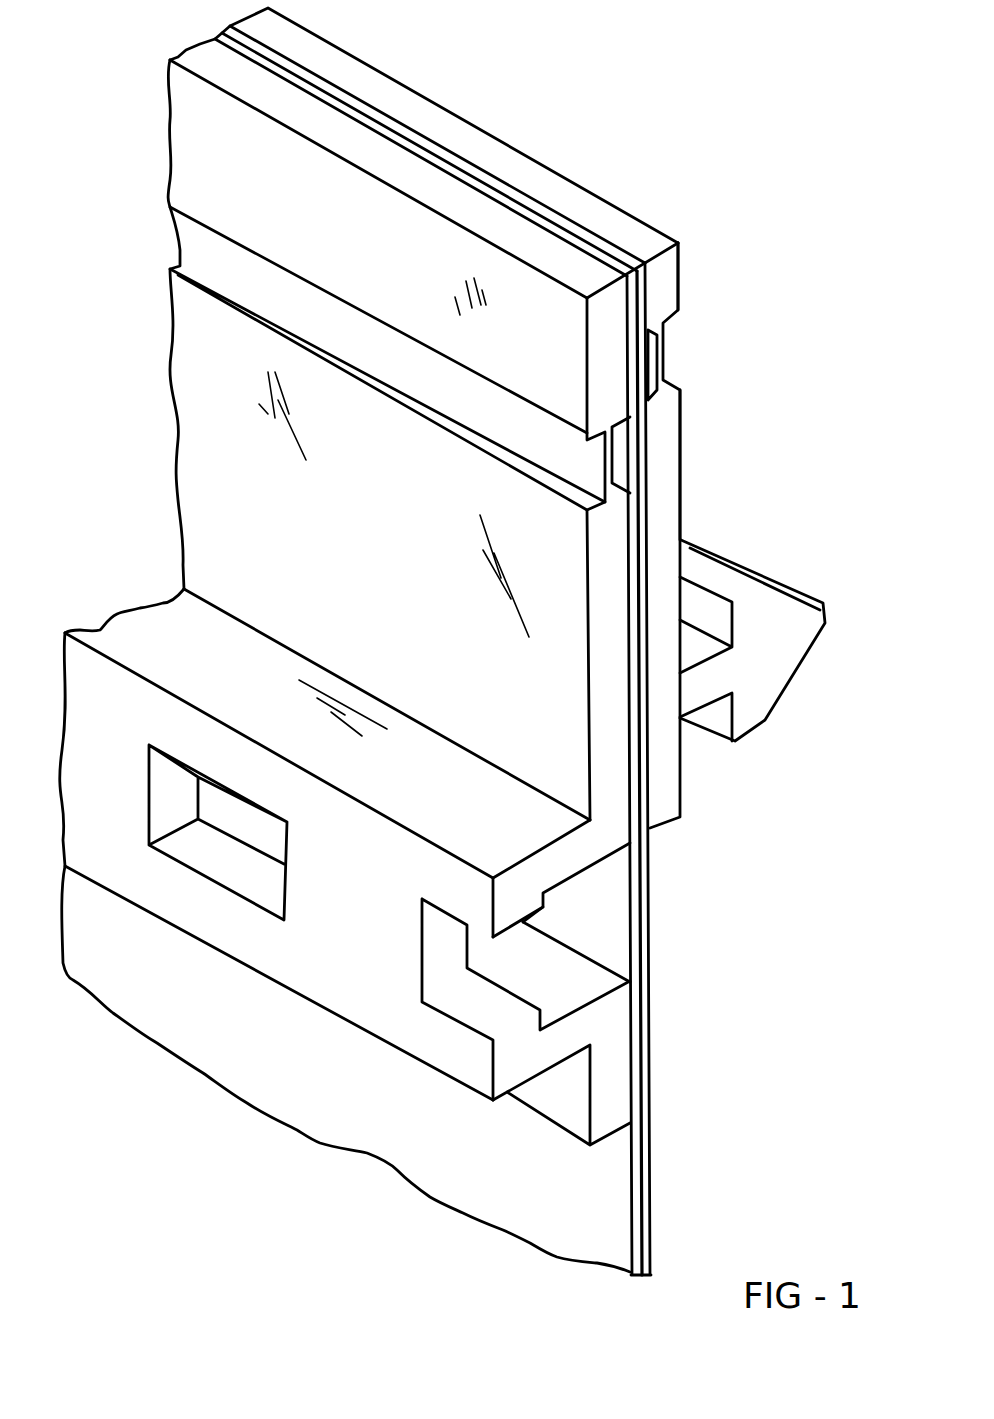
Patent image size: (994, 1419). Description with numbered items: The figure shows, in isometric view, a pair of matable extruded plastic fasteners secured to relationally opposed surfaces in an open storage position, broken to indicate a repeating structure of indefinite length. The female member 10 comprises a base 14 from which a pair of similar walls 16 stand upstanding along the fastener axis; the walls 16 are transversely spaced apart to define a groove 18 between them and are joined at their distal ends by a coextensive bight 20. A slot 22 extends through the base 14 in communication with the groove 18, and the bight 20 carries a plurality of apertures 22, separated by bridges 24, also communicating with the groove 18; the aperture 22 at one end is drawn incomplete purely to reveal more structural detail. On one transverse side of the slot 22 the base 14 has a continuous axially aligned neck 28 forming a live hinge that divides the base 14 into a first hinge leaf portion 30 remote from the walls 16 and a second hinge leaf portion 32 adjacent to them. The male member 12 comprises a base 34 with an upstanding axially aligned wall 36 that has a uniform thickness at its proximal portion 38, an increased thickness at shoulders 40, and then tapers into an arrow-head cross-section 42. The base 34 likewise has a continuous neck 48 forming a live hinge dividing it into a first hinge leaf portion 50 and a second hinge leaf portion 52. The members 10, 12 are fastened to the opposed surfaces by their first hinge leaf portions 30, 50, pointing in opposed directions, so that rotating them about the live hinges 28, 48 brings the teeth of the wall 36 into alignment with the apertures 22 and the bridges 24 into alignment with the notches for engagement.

The female extruded plastic fastener member 10 is at (310, 1012).
The male member 12 is at (772, 547).
The base 14 is at (198, 413).
The walls 16 is at (548, 865).
The groove 18 is at (597, 868).
The bight 20 is at (142, 708).
The apertures 22 is at (289, 838).
The bridges 24 is at (74, 804).
The neck 28 is at (474, 428).
The female member first hinge leaf portion 30 is at (348, 510).
The female member second hinge leaf portion 32 is at (338, 263).
The base 34 is at (685, 478).
The wall 36 is at (762, 738).
The proximal portion 38 is at (707, 713).
The shoulders 40 is at (737, 630).
The arrow-head cross-section 42 is at (808, 618).
The neck 48 is at (660, 360).
The male member first hinge leaf portion 50 is at (668, 437).
The male member second hinge leaf portion 52 is at (662, 278).